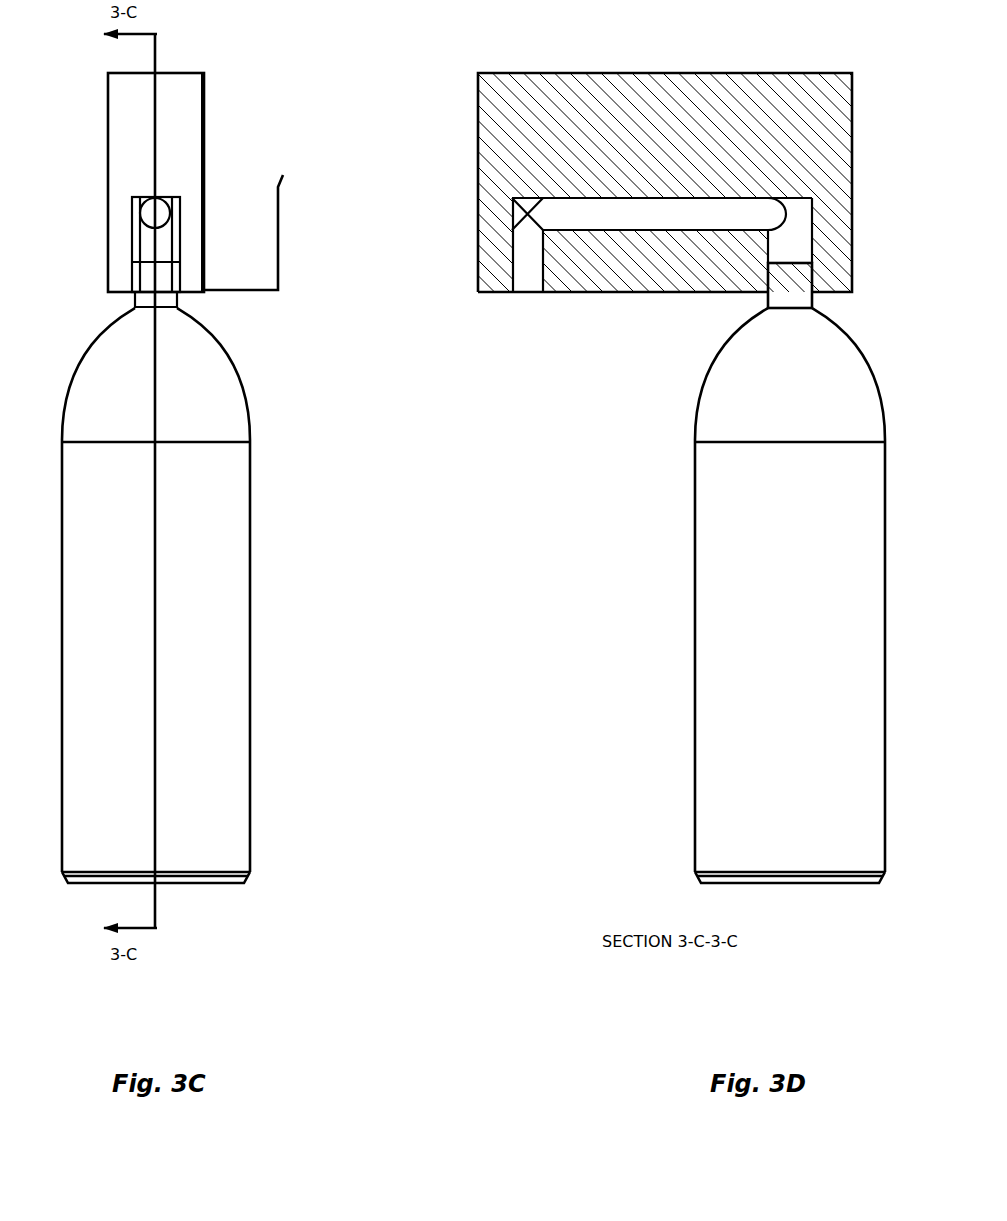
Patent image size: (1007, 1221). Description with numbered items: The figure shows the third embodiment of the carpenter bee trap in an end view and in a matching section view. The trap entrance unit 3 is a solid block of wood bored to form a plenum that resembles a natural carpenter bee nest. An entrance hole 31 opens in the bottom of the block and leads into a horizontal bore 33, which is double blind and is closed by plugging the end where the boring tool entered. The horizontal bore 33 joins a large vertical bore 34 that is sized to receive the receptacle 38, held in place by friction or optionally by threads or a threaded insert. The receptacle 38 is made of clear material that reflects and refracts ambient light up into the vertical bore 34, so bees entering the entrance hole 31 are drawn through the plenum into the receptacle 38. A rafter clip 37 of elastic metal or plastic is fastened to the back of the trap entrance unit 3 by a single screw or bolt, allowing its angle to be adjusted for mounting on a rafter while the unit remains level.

In FIG. 3C, the trap entrance unit 3 is at (203, 73).
In FIG. 3D, the trap entrance unit 3 is at (478, 73).
In FIG. 3D, the entrance hole 31 is at (523, 293).
In FIG. 3D, the horizontal bore 33 is at (687, 216).
In FIG. 3C, the vertical bore 34 is at (180, 292).
In FIG. 3D, the vertical bore 34 is at (765, 294).
In FIG. 3C, the rafter clip 37 is at (282, 248).
In FIG. 3C, the receptacle 38 is at (87, 363).
In FIG. 3D, the receptacle 38 is at (693, 660).